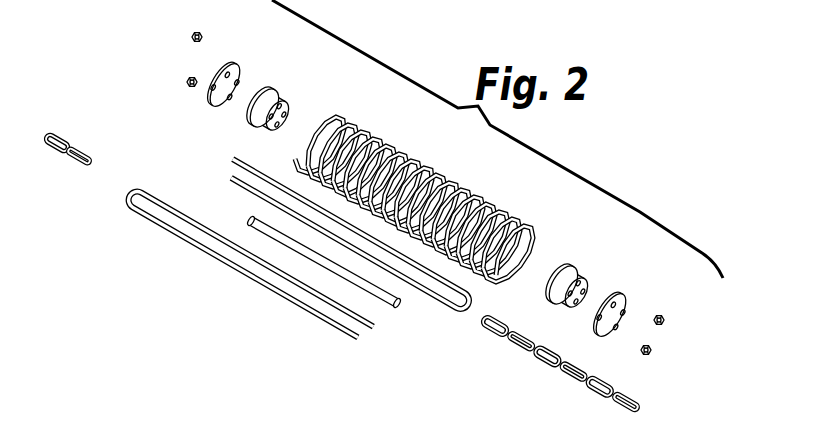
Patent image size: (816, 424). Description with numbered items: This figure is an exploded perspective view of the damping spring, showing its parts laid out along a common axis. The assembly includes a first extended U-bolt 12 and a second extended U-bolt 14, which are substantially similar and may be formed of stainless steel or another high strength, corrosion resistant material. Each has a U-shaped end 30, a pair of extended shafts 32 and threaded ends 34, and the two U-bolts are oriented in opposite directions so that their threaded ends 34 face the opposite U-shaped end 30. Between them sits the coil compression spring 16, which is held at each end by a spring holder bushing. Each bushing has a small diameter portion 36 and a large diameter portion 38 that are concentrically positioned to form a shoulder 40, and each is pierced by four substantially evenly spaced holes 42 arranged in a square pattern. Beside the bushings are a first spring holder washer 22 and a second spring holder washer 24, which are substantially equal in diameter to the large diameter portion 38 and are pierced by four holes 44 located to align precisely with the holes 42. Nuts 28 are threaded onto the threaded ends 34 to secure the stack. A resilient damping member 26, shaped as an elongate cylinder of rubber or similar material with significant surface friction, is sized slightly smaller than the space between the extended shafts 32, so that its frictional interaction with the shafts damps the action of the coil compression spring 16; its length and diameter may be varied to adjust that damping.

The first extended U-bolt 12 is at (457, 318).
The second extended U-bolt 14 is at (156, 226).
The coil compression spring 16 is at (402, 163).
The first spring holder washer 22 is at (630, 307).
The second spring holder washer 24 is at (233, 63).
The resilient damping member 26 is at (393, 312).
The nuts 28 is at (186, 80).
The U-shaped ends 30 is at (118, 203).
The extended shafts 32 is at (300, 222).
The threaded ends 34 is at (235, 152).
The small diameter portion 36 is at (298, 103).
The large diameter portion 38 is at (256, 95).
The shoulder 40 is at (260, 125).
The holes 42 is at (283, 128).
The holes 44 is at (238, 80).